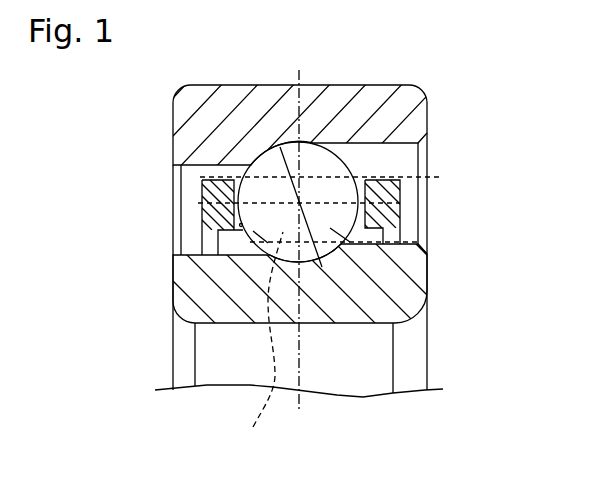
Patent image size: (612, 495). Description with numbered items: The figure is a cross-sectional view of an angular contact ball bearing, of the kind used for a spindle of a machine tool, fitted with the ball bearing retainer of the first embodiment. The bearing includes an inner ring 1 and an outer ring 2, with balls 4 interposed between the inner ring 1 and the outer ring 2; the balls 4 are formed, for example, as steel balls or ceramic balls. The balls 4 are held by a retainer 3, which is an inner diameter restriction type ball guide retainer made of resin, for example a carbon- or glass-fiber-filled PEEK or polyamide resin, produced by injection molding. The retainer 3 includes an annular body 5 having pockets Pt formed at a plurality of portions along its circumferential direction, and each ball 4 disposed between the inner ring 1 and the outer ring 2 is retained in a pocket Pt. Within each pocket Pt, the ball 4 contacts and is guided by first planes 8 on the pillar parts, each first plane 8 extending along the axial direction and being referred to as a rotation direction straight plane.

The inner ring 1 is at (350, 307).
The outer ring 2 is at (337, 97).
The retainer 3 is at (377, 180).
The ball 4 is at (268, 163).
The annular body 5 is at (200, 187).
The first plane 8 is at (262, 345).
The pocket Pt is at (240, 226).